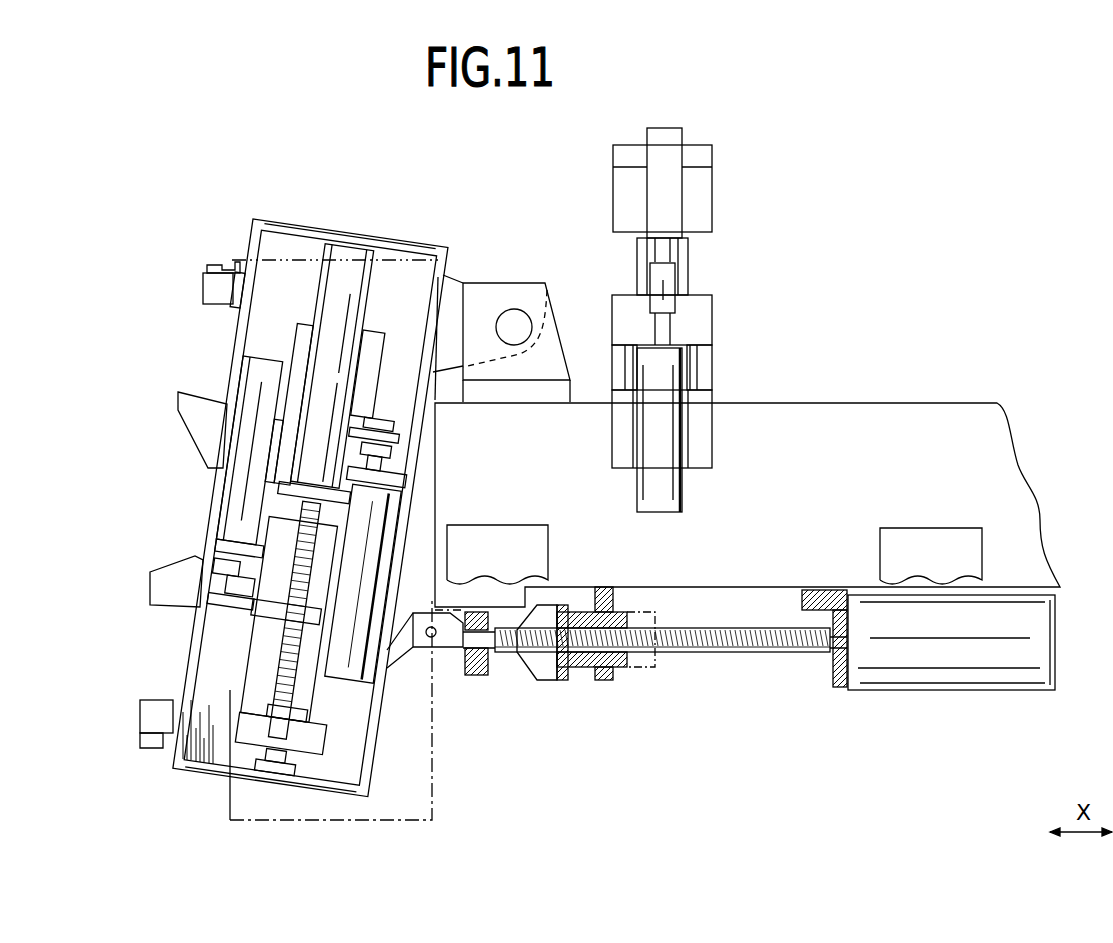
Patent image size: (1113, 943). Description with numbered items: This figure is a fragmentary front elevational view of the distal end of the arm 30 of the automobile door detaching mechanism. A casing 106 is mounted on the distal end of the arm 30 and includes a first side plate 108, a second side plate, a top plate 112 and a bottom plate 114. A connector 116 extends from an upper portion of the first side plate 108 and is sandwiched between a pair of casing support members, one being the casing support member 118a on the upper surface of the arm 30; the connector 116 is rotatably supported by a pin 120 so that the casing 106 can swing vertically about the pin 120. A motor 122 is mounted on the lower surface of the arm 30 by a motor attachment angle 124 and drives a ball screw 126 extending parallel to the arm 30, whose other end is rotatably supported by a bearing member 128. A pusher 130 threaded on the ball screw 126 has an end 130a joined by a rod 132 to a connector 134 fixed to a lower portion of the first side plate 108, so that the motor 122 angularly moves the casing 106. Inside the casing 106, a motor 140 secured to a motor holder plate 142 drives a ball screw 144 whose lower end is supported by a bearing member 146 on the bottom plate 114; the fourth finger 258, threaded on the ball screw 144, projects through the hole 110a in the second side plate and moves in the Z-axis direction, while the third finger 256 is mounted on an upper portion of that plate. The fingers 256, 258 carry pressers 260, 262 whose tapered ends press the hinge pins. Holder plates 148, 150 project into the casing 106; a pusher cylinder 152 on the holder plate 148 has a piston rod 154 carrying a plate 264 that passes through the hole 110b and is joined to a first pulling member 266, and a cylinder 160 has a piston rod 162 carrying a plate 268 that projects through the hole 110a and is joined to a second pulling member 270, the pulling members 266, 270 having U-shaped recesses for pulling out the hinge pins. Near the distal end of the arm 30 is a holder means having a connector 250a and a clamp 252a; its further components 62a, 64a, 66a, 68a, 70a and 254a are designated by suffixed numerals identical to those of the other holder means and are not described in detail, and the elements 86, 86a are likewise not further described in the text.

The arm 30 is at (938, 420).
The housing 62a is at (700, 432).
The bearing 64a is at (705, 368).
The bearing 66a is at (622, 372).
The spindle 68a is at (667, 490).
The coupling 70a is at (665, 330).
The block 86 is at (913, 548).
The block 86a is at (535, 538).
The casing 106 is at (392, 214).
The first side plate 108 is at (410, 505).
The hole 110a is at (253, 683).
The hole 110b is at (300, 327).
The top plate 112 is at (330, 232).
The bottom plate 114 is at (213, 778).
The connector 116 is at (457, 275).
The casing support member 118a is at (533, 292).
The pin 120 is at (513, 323).
The motor 122 is at (950, 677).
The motor attachment angle 124 is at (832, 688).
The ball screw 126 is at (720, 652).
The bearing member 128 is at (470, 680).
The pusher 130 is at (580, 667).
The end 130a is at (535, 670).
The rod 132 is at (450, 648).
The connector 134 is at (397, 657).
The motor 140 is at (345, 302).
The motor holder plate 142 is at (280, 493).
The ball screw 144 is at (280, 663).
The bearing member 146 is at (267, 777).
The holder plate 148 is at (433, 497).
The holder plate 150 is at (225, 547).
The pusher cylinder 152 is at (347, 672).
The piston rod 154 is at (420, 472).
The cylinder 160 is at (247, 378).
The piston rod 162 is at (210, 567).
The connector 250a is at (667, 212).
The clamp 252a is at (703, 157).
The cylinder 254a is at (695, 183).
The third finger 256 is at (212, 287).
The fourth finger 258 is at (152, 712).
The presser 260 is at (215, 262).
The presser 262 is at (150, 742).
The plate 264 is at (400, 440).
The first pulling member 266 is at (195, 410).
The plate 268 is at (222, 610).
The second pulling member 270 is at (180, 580).